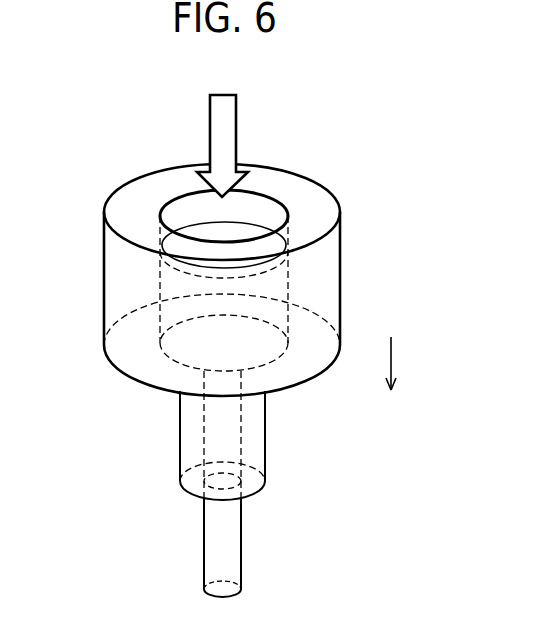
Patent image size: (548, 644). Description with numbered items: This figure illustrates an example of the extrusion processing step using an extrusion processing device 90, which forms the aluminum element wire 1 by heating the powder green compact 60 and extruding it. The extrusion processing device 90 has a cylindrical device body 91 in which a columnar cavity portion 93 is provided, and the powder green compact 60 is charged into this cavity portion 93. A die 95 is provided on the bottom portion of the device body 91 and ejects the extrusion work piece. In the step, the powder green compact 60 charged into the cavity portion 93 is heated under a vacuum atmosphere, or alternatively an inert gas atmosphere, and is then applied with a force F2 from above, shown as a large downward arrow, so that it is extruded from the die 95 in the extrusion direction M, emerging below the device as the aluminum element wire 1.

The aluminum element wire 1 is at (242, 541).
The powder green compact 60 is at (238, 232).
The extrusion processing device 90 is at (248, 256).
The device body 91 is at (103, 289).
The cavity portion 93 is at (176, 207).
The die 95 is at (191, 496).
The force F2 is at (236, 112).
The extrusion direction M is at (400, 363).